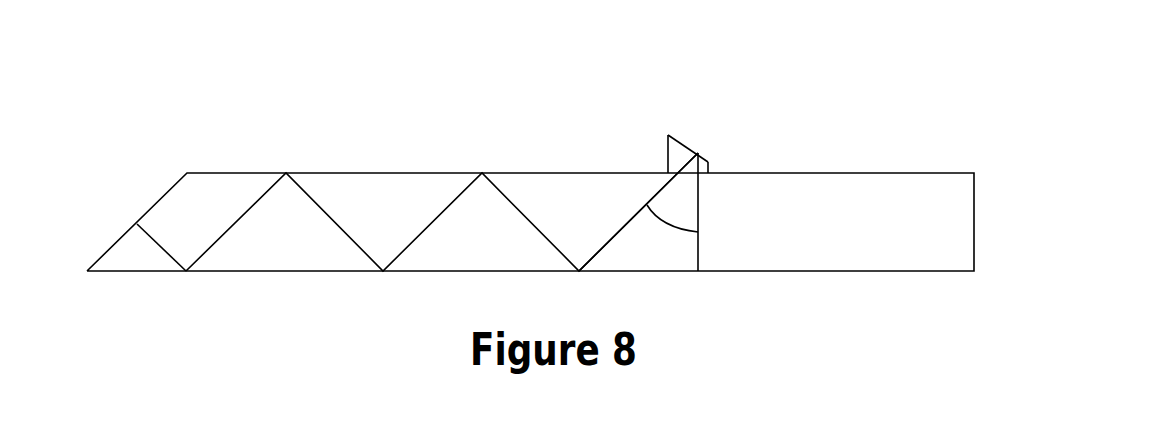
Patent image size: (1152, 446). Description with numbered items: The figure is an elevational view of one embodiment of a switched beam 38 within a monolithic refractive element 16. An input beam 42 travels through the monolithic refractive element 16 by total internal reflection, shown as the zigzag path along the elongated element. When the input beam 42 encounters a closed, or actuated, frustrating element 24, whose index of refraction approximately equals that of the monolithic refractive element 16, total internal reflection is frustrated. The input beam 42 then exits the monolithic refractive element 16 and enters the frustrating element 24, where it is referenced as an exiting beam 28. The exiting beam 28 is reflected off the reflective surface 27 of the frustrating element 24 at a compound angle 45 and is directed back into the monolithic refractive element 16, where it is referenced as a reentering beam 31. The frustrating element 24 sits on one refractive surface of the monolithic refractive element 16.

The folded sheet assembly 38 is at (994, 121).
The monolithic refractive element 16 is at (950, 223).
The input beam 42 is at (158, 248).
The frustrating element 24 is at (680, 153).
The reflective surface 27 is at (693, 149).
The exiting beam 28 is at (652, 200).
The reentering beam 31 is at (702, 250).
The compound angle 45 is at (665, 224).